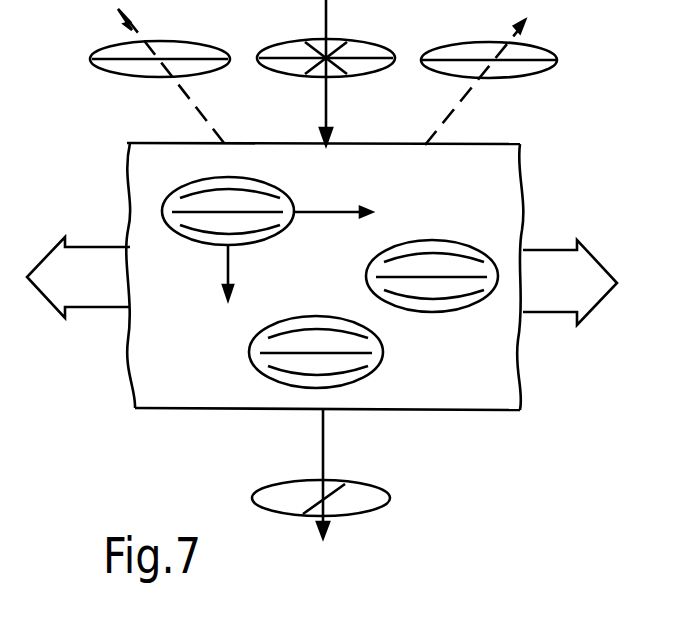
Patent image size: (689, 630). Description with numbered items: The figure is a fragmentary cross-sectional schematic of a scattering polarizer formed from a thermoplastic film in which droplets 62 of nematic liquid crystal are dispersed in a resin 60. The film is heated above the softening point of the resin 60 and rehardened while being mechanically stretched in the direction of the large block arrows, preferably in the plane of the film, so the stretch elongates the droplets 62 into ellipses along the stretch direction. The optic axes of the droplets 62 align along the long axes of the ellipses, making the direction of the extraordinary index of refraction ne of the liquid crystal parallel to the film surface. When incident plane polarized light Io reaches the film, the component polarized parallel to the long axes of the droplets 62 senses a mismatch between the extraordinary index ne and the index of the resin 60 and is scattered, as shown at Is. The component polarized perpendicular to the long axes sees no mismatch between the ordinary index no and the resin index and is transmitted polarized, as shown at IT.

The resin 60 is at (505, 188).
The liquid crystal droplets 62 is at (478, 302).
The scattered light Is is at (323, 74).
The incident plane polarized light Io is at (326, 72).
The transmitted polarized light IT is at (321, 486).
The extraordinary index of refraction ne is at (333, 195).
The ordinary index of refraction no is at (208, 272).